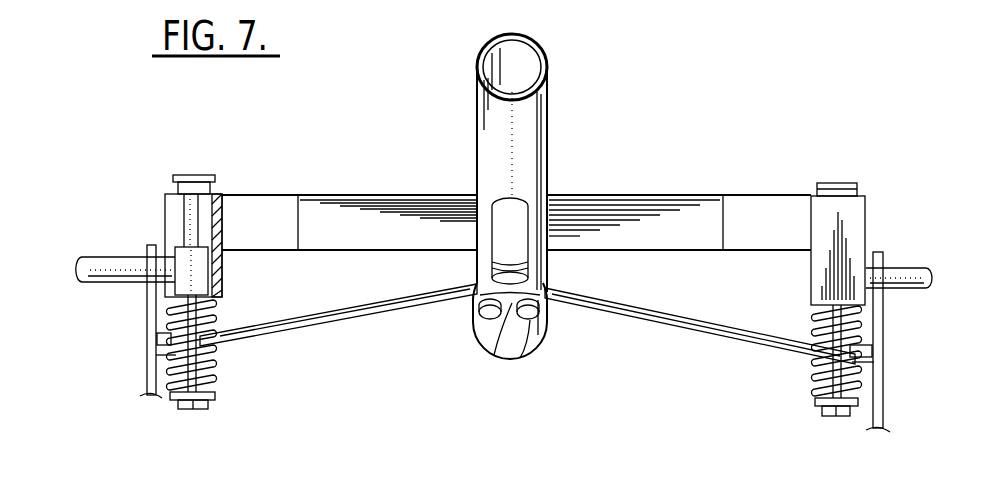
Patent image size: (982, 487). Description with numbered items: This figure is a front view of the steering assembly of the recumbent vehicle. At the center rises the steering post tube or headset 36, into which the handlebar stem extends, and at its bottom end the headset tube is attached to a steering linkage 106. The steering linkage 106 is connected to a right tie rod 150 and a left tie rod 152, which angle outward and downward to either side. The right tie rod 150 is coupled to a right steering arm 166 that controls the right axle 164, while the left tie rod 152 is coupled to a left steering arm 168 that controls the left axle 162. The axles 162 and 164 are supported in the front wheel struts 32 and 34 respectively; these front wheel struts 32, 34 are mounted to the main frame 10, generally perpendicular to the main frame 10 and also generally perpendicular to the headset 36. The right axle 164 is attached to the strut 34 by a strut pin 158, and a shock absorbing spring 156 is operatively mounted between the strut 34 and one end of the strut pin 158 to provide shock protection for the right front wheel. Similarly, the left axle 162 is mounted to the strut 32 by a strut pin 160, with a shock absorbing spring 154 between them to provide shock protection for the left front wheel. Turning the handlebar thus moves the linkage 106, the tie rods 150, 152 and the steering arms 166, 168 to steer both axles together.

The main frame 10 is at (550, 100).
The front wheel strut 32 is at (638, 196).
The front wheel strut 34 is at (388, 195).
The steering post tube 36 is at (515, 242).
The steering linkage 106 is at (508, 303).
The right tie rod 150 is at (340, 322).
The left tie rod 152 is at (673, 328).
The shock absorbing spring 154 is at (815, 387).
The shock absorbing spring 156 is at (212, 370).
The strut pin 158 is at (193, 409).
The strut pin 160 is at (830, 416).
The left axle 162 is at (915, 268).
The right axle 164 is at (110, 256).
The right steering arm 166 is at (146, 368).
The left steering arm 168 is at (884, 388).